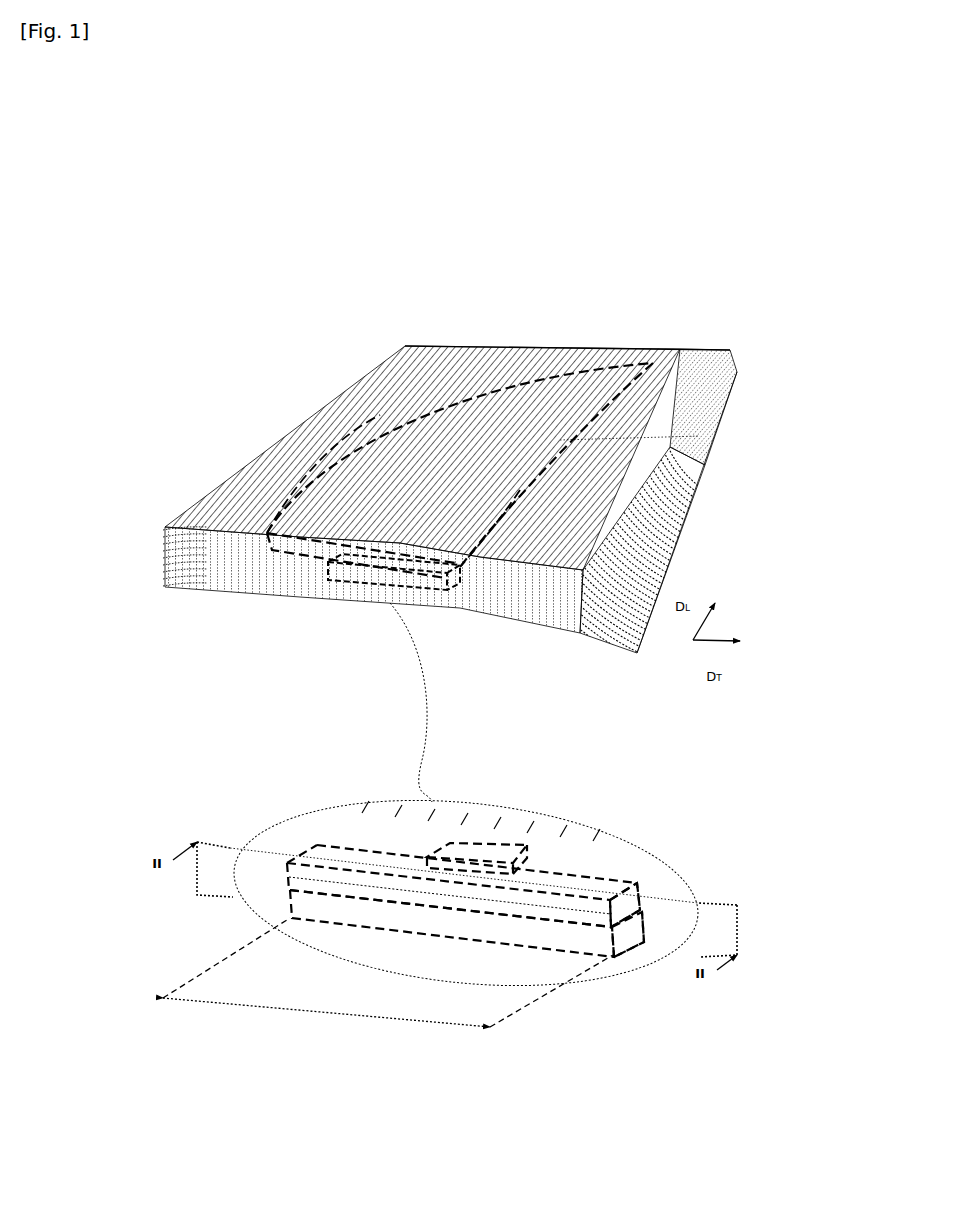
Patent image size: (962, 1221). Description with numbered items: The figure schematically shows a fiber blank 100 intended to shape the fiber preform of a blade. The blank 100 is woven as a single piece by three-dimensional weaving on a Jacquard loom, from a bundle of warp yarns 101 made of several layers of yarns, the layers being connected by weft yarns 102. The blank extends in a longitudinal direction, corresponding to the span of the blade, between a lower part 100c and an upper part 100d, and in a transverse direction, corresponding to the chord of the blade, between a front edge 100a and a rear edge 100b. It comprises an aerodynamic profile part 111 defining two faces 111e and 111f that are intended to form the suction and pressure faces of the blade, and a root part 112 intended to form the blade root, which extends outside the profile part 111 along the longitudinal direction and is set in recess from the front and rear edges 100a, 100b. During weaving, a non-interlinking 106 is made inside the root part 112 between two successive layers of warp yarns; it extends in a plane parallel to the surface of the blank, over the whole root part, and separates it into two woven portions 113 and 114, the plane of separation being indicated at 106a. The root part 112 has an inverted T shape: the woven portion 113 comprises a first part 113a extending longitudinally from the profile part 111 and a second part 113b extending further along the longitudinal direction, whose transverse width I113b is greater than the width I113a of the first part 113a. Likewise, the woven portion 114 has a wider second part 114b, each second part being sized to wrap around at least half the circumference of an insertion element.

The fiber blank 100 is at (562, 407).
The front edge 100a is at (385, 360).
The rear edge 100b is at (733, 429).
The lower part 100c is at (366, 603).
The upper part 100d is at (589, 350).
The warp yarns 101 is at (505, 608).
The weft yarns 102 is at (702, 481).
The non-interlinking 106 is at (410, 895).
The substrate surface 106a is at (455, 912).
The aerodynamic profile part 111 is at (503, 405).
The face 111e is at (301, 428).
The face 111f is at (448, 605).
The root part 112 is at (284, 590).
The woven portion 113 is at (539, 908).
The first part 113a is at (553, 838).
The second part 113b is at (650, 883).
The woven portion 114 is at (495, 912).
The second part 114b is at (637, 935).
The width of first part I113a is at (486, 850).
The width of second part I113b is at (335, 1015).